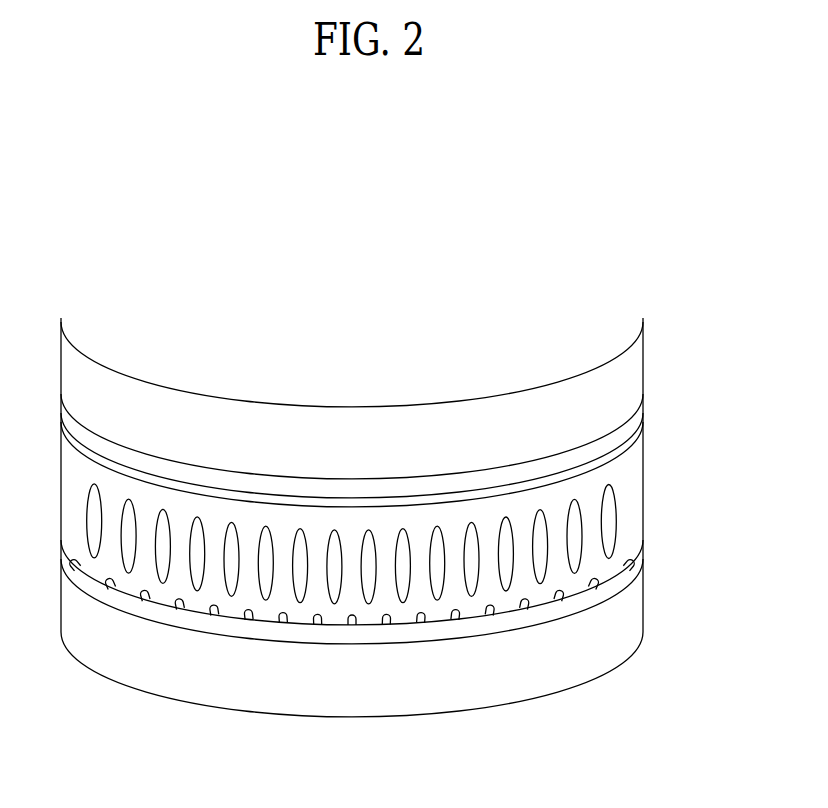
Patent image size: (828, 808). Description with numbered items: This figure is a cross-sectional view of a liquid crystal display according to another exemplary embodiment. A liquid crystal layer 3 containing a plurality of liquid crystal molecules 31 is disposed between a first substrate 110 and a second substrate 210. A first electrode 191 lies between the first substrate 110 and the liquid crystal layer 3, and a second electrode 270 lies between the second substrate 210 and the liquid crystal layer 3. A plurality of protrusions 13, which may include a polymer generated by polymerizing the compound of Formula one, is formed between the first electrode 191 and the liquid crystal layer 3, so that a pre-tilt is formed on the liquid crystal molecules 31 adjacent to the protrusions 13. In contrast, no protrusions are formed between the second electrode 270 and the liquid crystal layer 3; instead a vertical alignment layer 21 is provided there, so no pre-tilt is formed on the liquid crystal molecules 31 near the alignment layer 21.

The second substrate 210 is at (633, 372).
The second electrode 270 is at (637, 418).
The alignment layer 21 is at (638, 435).
The liquid crystal layer 3 is at (55, 408).
The liquid crystal molecules 31 is at (610, 508).
The protrusions 13 is at (647, 552).
The first electrode 191 is at (628, 572).
The first substrate 110 is at (635, 598).